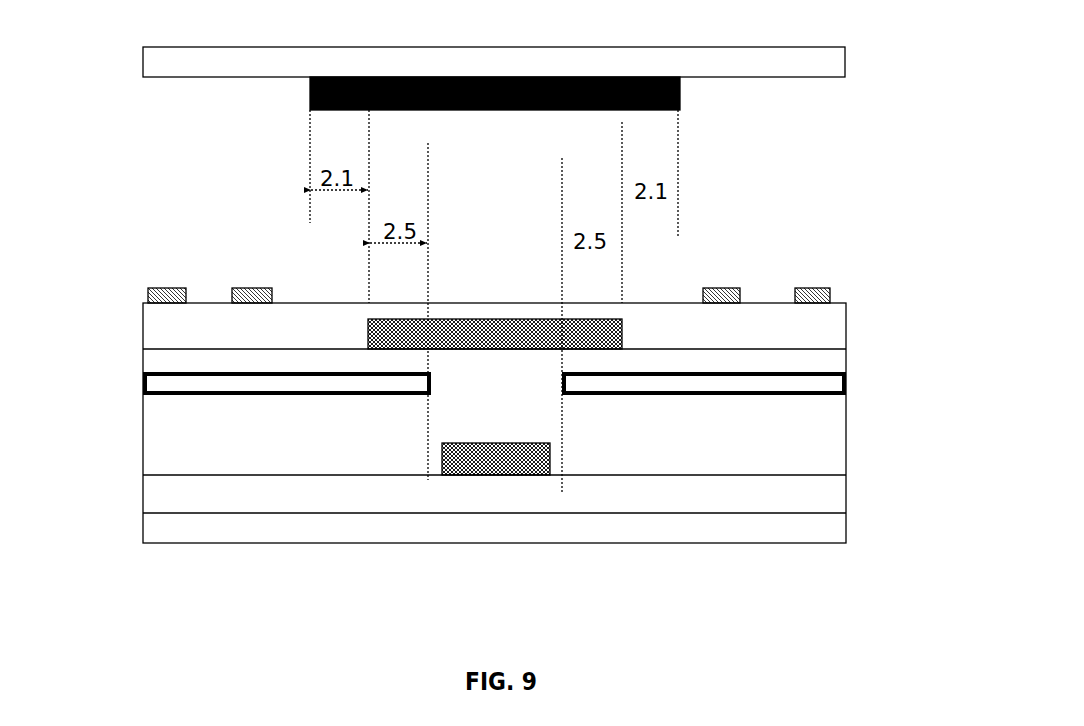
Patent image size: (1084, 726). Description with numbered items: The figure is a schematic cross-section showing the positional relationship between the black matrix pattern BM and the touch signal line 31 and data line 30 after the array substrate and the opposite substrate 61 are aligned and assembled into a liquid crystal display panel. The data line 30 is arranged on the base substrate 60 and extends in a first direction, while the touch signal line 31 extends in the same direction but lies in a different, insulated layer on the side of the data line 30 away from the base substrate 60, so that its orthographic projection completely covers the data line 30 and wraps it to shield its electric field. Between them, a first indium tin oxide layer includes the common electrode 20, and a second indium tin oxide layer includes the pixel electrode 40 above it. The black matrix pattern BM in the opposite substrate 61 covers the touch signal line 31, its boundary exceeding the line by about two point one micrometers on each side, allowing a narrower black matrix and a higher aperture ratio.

The opposite substrate 61 is at (153, 62).
The black matrix pattern BM is at (743, 98).
The touch signal line 31 is at (600, 322).
The pixel electrode 40 is at (830, 290).
The common electrode 20 is at (150, 383).
The data line 30 is at (475, 475).
The base substrate 60 is at (835, 528).